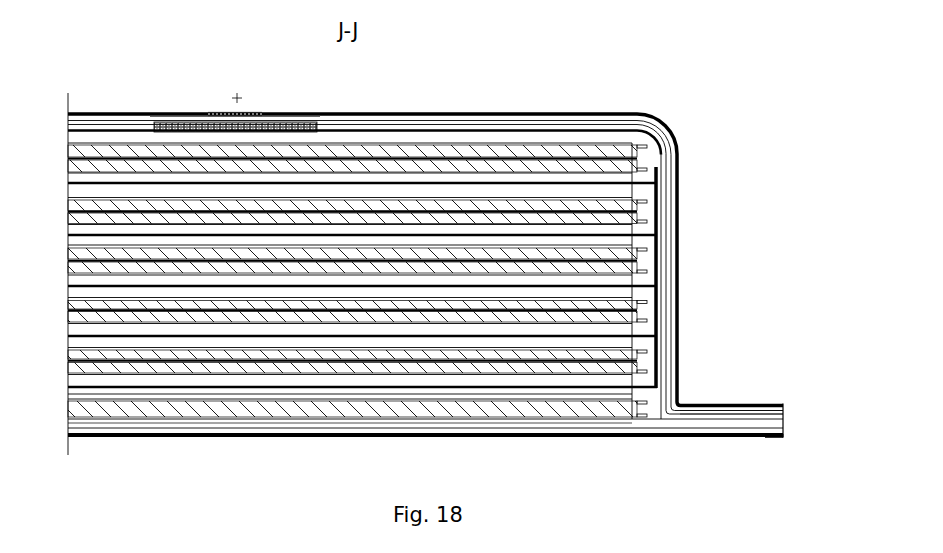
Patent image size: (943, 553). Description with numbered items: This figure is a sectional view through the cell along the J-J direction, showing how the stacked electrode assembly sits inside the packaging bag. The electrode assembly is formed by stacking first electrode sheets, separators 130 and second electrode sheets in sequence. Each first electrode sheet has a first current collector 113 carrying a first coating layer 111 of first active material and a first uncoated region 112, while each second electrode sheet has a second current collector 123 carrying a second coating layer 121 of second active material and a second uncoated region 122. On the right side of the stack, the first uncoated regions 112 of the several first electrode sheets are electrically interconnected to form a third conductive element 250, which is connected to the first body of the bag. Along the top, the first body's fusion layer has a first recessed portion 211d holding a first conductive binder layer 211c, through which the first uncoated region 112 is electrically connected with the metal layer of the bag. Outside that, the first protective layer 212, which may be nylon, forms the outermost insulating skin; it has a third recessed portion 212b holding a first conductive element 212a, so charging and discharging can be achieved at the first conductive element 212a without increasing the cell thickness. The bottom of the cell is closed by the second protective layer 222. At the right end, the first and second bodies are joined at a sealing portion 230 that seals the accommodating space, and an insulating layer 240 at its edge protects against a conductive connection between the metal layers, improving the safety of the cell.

The first uncoated region 112 is at (95, 130).
The first coating layer 111 is at (97, 142).
The separator 130 is at (95, 147).
The second coating layer 121 is at (95, 206).
The first current collector 113 is at (108, 335).
The second current collector 123 is at (97, 362).
The second uncoated region 122 is at (95, 417).
The first conductive binder layer 211c is at (213, 126).
The first recessed portion 211d is at (243, 123).
The first protective layer 212 is at (403, 112).
The first conductive element 212a is at (257, 110).
The third recessed portion 212b is at (262, 116).
The third conductive element 250 is at (657, 238).
The sealing portion 230 is at (729, 420).
The insulating layer 240 is at (785, 415).
The second protective layer 222 is at (400, 438).